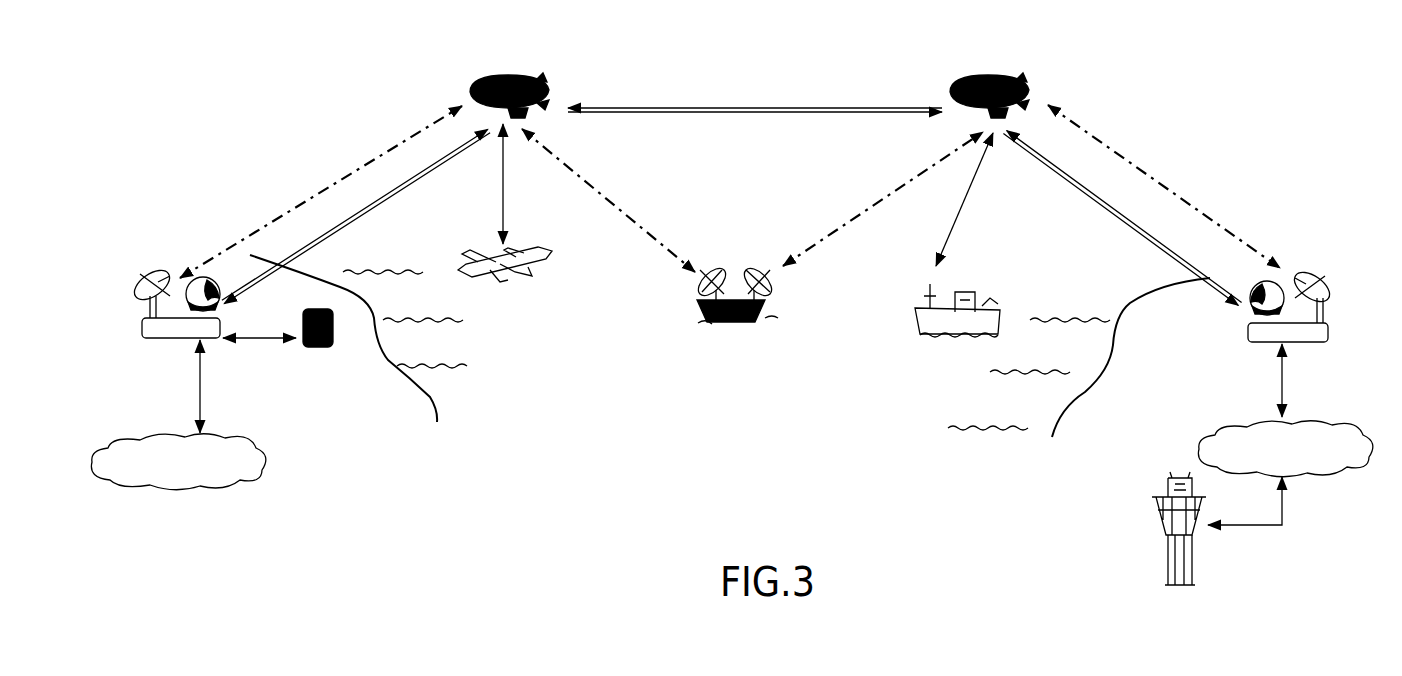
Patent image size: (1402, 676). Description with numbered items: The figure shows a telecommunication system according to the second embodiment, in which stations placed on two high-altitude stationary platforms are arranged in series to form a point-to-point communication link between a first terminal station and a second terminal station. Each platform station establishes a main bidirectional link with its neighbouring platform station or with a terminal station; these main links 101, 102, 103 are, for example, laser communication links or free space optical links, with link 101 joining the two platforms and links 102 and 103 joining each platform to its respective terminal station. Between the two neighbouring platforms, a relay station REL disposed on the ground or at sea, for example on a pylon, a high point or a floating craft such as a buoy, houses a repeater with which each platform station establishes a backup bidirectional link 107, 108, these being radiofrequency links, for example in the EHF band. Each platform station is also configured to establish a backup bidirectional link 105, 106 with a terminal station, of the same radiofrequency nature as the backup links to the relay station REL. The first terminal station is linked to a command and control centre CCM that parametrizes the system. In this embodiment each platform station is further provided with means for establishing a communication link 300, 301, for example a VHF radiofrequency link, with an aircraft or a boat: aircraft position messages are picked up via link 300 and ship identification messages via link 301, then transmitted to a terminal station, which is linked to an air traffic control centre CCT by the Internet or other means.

The main bidirectional link 101 is at (712, 110).
The main bidirectional link 102 is at (403, 190).
The main bidirectional link 103 is at (1097, 207).
The backup bidirectional link 105 is at (352, 170).
The backup bidirectional link 106 is at (1150, 176).
The backup bidirectional link 107 is at (623, 217).
The backup bidirectional link 108 is at (853, 217).
The radiofrequency communication link 300 is at (500, 160).
The radiofrequency communication link 301 is at (958, 220).
The command and control centre CCM is at (337, 327).
The air traffic control centre CCT is at (1192, 550).
The relay station REL is at (730, 322).